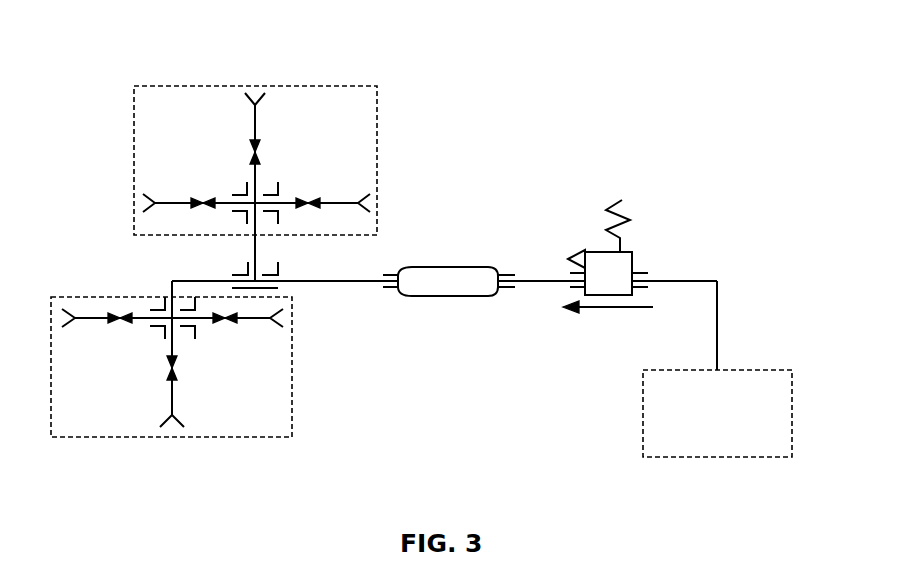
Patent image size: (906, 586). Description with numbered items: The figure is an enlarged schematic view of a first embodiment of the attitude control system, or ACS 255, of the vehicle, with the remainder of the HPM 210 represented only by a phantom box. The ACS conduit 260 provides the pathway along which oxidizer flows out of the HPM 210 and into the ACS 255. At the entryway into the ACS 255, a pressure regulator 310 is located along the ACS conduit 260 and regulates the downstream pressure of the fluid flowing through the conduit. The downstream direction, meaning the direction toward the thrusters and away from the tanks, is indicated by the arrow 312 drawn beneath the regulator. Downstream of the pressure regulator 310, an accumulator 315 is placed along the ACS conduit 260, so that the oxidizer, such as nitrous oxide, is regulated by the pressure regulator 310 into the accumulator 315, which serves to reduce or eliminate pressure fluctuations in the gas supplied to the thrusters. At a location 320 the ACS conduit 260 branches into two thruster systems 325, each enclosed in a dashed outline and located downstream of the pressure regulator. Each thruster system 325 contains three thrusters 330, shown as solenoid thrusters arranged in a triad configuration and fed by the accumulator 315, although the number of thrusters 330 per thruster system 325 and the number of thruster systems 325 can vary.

The ACS 255 is at (117, 58).
The thruster system 325 is at (377, 162).
The thruster 330 is at (203, 199).
The location 320 is at (266, 272).
The accumulator 315 is at (444, 267).
The pressure regulator 310 is at (633, 262).
The arrow 312 is at (603, 309).
The ACS conduit 260 is at (718, 328).
The HPM 210 is at (793, 410).